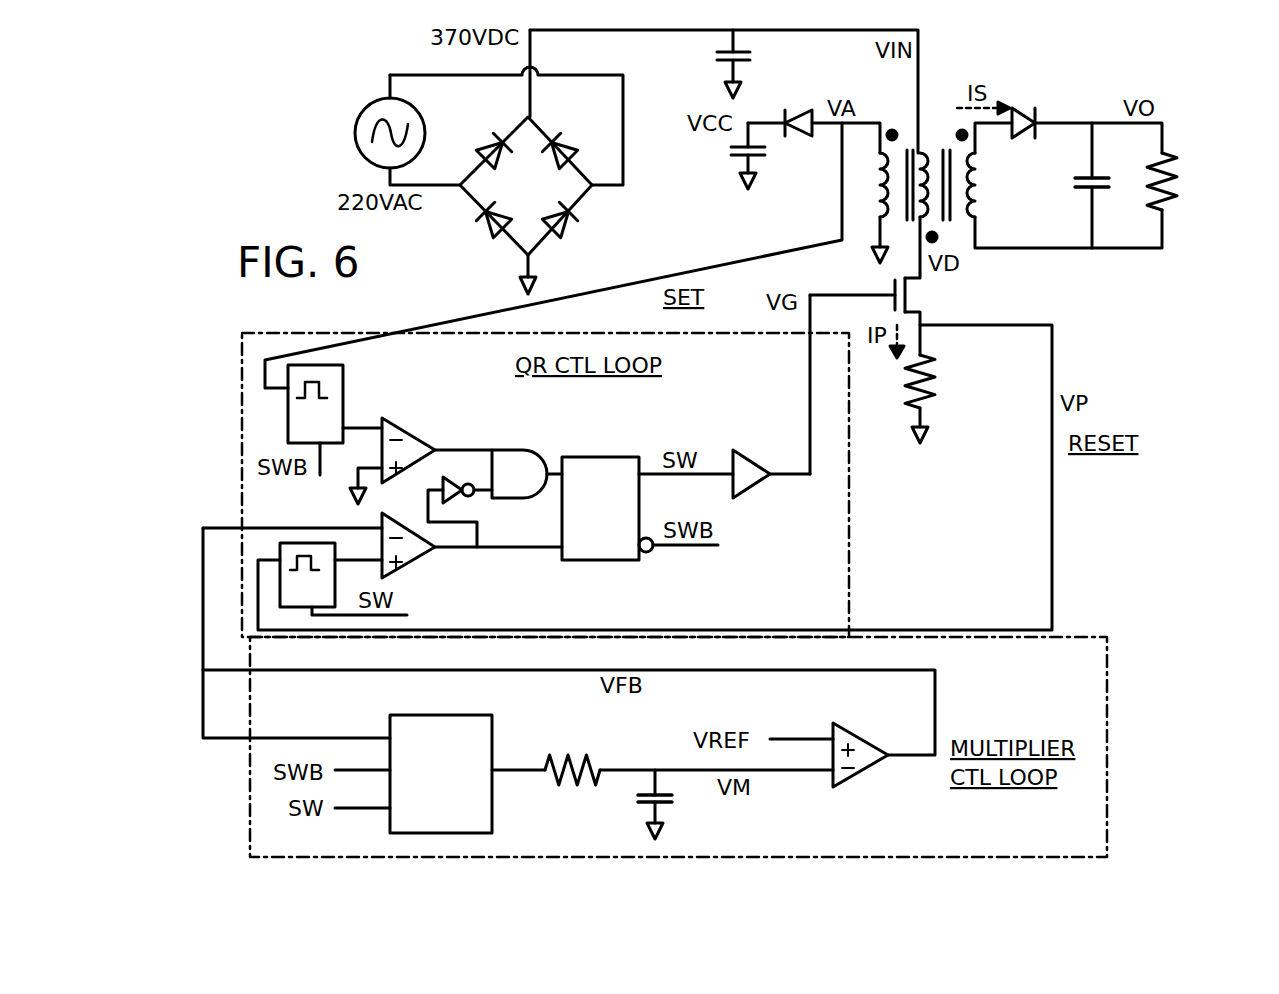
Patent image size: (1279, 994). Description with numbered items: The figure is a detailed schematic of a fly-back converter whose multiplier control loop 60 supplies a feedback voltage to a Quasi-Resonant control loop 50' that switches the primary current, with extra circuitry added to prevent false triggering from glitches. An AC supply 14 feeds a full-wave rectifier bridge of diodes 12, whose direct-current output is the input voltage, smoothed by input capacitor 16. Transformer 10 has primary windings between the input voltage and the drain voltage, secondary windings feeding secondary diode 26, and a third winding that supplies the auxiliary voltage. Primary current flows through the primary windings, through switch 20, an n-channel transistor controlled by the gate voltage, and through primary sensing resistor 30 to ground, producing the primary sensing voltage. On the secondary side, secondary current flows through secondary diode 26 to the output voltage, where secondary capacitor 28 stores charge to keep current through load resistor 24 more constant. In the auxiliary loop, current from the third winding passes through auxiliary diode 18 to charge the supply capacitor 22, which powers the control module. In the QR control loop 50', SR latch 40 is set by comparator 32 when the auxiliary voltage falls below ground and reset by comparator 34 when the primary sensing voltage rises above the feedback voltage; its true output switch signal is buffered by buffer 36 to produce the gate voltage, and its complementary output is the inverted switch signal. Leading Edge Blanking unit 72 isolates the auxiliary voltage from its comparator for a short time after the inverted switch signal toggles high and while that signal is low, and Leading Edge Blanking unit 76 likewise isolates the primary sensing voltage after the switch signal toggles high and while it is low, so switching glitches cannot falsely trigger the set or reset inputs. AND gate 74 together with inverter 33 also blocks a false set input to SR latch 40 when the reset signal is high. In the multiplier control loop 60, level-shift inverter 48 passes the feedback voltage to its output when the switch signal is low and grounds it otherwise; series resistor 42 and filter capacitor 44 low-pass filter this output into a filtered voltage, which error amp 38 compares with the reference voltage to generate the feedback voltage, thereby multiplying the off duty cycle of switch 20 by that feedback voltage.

The transformer 10 is at (975, 197).
The diodes 12 is at (488, 138).
The AC supply 14 is at (364, 112).
The input capacitor 16 is at (722, 63).
The auxiliary diode 18 is at (810, 112).
The switch 20 is at (918, 300).
The VCC capacitor 22 is at (732, 154).
The load resistor 24 is at (1180, 166).
The secondary diode 26 is at (1022, 112).
The secondary capacitor 28 is at (1076, 184).
The primary sensing resistor 30 is at (935, 404).
The comparator 32 is at (422, 462).
The inverter 33 is at (462, 498).
The comparator 34 is at (416, 560).
The buffer 36 is at (772, 478).
The error amp 38 is at (874, 770).
The SR latch 40 is at (607, 508).
The series resistor 42 is at (562, 790).
The filter capacitor 44 is at (638, 798).
The level-shift inverter 48 is at (441, 774).
The QR control loop 50' is at (625, 412).
The multiplier control loop 60 is at (1051, 812).
The Leading Edge Blanking unit 72 is at (315, 404).
The AND gate 74 is at (519, 474).
The Leading Edge Blanking unit 76 is at (307, 575).